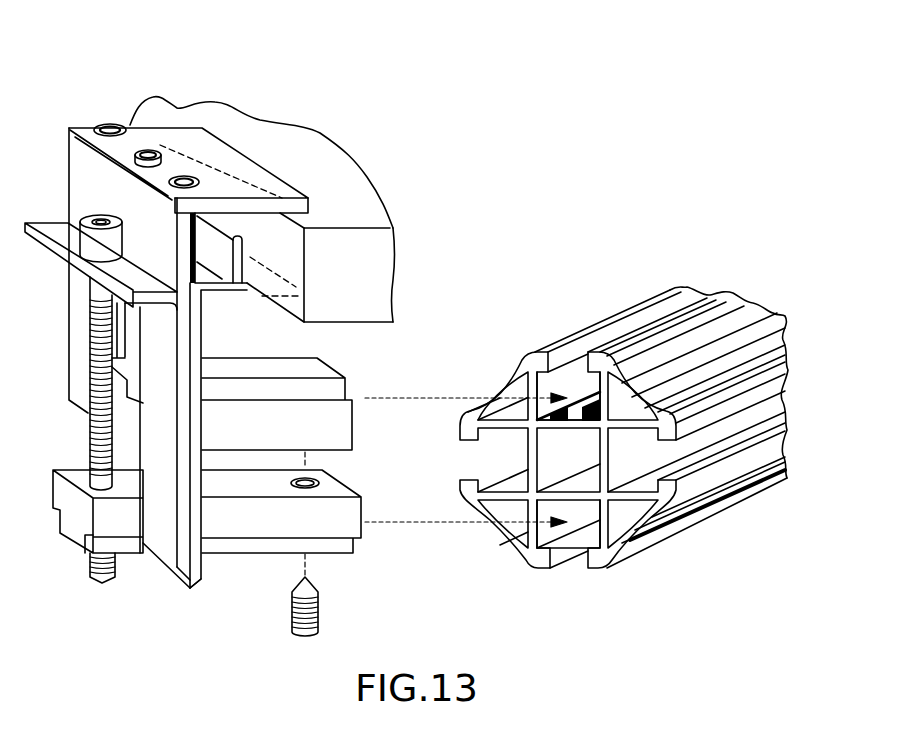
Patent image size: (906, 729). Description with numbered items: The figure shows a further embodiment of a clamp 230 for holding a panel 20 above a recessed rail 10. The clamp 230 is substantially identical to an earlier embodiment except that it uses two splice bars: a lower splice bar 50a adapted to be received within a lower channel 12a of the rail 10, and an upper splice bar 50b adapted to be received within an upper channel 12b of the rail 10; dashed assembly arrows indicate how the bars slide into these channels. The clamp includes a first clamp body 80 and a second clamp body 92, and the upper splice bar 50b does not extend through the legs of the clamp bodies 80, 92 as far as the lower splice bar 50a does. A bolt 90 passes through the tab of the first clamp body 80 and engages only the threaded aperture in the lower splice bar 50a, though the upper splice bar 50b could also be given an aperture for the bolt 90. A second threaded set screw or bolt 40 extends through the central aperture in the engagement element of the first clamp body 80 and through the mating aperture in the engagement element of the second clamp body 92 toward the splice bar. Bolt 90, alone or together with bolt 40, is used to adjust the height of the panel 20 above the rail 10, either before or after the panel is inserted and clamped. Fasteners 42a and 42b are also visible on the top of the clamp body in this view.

The clamp 230 is at (397, 56).
The panel 20 is at (358, 290).
The fastener 42b is at (110, 126).
The second threaded set screw or bolt 40 is at (152, 154).
The fastener 42a is at (200, 182).
The bolt 90 is at (92, 224).
The first clamp body 80 is at (163, 550).
The second clamp body 92 is at (198, 580).
The upper splice bar 50b is at (280, 434).
The lower splice bar 50a is at (280, 534).
The rail 10 is at (538, 346).
The upper channel 12b is at (572, 377).
The lower channel 12a is at (573, 548).